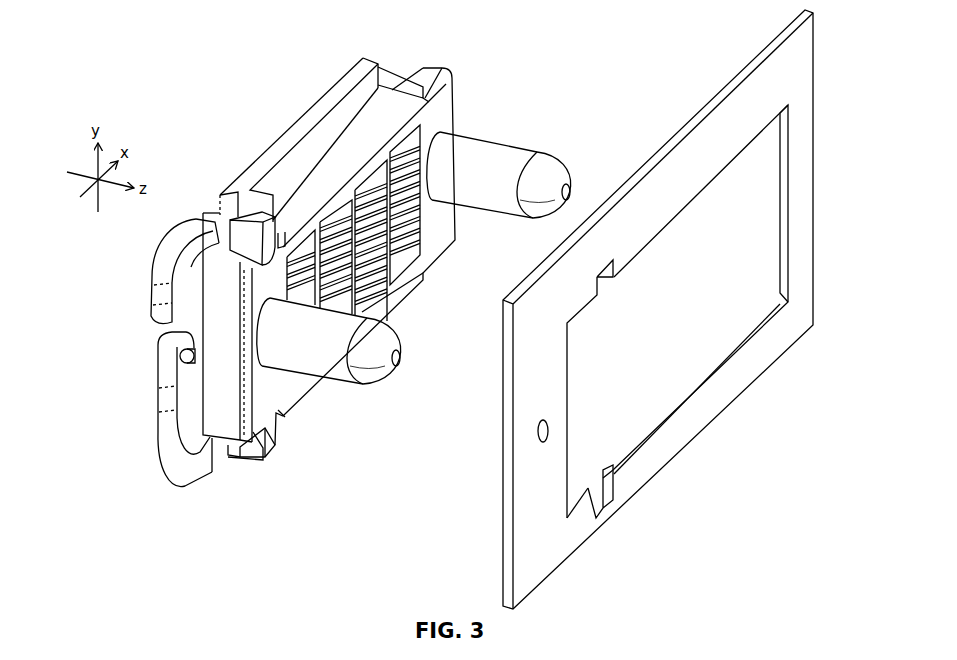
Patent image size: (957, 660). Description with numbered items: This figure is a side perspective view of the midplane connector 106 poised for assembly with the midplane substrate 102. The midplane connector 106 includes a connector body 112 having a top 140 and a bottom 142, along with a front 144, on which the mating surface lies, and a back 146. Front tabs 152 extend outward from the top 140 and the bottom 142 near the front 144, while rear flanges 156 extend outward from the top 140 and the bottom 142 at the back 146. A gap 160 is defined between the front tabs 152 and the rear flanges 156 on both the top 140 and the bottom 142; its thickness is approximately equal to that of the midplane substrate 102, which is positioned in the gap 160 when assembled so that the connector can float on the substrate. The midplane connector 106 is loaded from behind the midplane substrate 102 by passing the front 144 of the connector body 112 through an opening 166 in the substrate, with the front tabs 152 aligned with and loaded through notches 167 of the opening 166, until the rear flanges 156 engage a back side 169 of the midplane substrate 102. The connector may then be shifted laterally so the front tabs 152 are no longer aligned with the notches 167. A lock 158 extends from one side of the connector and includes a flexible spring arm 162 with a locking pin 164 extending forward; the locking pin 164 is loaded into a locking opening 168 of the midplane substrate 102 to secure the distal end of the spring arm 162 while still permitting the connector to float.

The midplane connector 106 is at (512, 56).
The midplane substrate 102 is at (703, 148).
The connector body 112 is at (390, 95).
The top 140 is at (203, 137).
The bottom 142 is at (348, 400).
The front 144 is at (442, 275).
The back 146 is at (188, 197).
The front tabs 152 is at (250, 213).
The rear flanges 156 is at (306, 122).
The lock 158 is at (158, 460).
The gap 160 is at (212, 247).
The spring arm 162 is at (165, 397).
The locking pin 164 is at (181, 357).
The opening 166 is at (693, 353).
The notches 167 is at (597, 272).
The locking opening 168 is at (537, 432).
The back side 169 is at (503, 505).